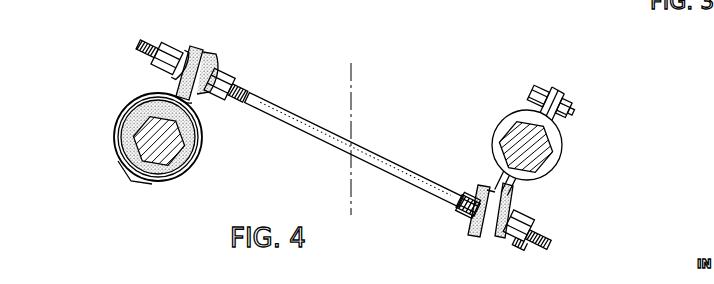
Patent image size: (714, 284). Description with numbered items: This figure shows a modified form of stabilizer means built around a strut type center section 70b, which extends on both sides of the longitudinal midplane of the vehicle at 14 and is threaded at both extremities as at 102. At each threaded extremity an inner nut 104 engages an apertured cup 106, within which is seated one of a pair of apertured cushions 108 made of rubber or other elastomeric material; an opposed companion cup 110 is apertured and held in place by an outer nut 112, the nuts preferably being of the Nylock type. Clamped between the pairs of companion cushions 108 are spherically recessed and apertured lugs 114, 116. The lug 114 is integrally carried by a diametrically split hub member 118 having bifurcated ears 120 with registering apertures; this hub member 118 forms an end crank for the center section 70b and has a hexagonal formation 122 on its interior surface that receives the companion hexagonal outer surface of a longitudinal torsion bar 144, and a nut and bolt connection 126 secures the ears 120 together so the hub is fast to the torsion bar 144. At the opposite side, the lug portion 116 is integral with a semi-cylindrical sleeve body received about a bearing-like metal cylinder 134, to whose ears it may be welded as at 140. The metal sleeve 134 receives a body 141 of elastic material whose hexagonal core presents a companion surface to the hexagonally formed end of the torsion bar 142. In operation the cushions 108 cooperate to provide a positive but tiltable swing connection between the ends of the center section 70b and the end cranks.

The longitudinal midplane of the vehicle 14 is at (352, 92).
The strut type center section 70b is at (364, 148).
The threaded extremity 102 is at (142, 42).
The inner nut 104 is at (486, 186).
The apertured cup 106 is at (470, 226).
The apertured cushion 108 is at (191, 47).
The companion cup 110 is at (526, 208).
The outer nut 112 is at (525, 241).
The lug 114 is at (486, 170).
The lug portion 116 is at (192, 103).
The diametrically split hub member 118 is at (558, 135).
The bifurcated ears 120 is at (553, 93).
The hexagonal formation 122 is at (503, 128).
The nut and bolt connection 126 is at (570, 110).
The metal cylinder 134 is at (183, 177).
The weld 140 is at (118, 172).
The body of elastic material 141 is at (162, 168).
The torsion bar 142 is at (175, 152).
The longitudinal torsion bar 144 is at (546, 155).